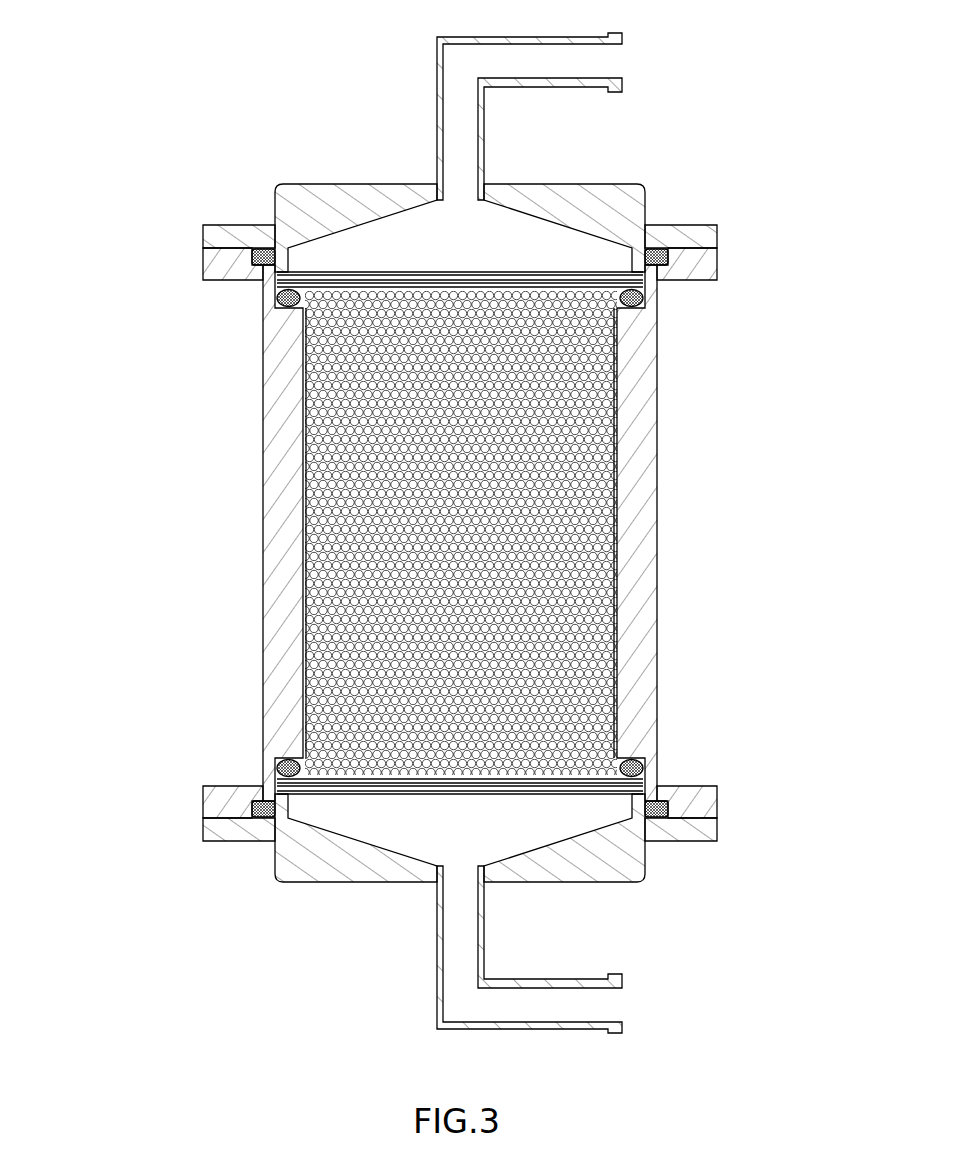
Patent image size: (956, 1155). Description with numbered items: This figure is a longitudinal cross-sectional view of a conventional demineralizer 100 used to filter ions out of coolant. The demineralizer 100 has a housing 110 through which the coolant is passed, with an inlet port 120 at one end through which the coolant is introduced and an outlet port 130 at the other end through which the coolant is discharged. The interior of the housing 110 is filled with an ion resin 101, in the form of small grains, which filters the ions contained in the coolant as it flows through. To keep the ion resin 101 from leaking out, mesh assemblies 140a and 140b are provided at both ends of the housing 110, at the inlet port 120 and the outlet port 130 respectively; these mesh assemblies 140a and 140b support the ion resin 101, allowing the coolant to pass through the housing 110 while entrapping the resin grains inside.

The demineralizer 100 is at (233, 575).
The ion resin 101 is at (323, 452).
The housing 110 is at (657, 537).
The inlet port 120 is at (437, 970).
The outlet port 130 is at (437, 93).
The mesh assembly 140a is at (575, 777).
The mesh assembly 140b is at (560, 290).